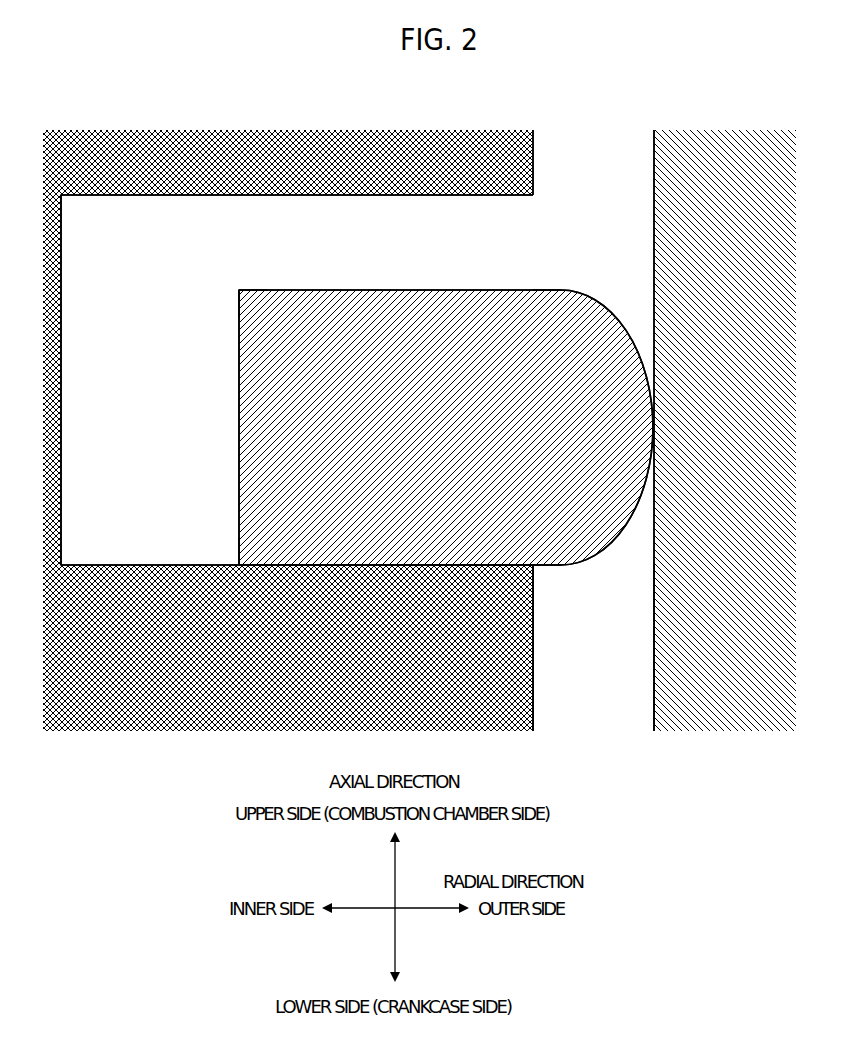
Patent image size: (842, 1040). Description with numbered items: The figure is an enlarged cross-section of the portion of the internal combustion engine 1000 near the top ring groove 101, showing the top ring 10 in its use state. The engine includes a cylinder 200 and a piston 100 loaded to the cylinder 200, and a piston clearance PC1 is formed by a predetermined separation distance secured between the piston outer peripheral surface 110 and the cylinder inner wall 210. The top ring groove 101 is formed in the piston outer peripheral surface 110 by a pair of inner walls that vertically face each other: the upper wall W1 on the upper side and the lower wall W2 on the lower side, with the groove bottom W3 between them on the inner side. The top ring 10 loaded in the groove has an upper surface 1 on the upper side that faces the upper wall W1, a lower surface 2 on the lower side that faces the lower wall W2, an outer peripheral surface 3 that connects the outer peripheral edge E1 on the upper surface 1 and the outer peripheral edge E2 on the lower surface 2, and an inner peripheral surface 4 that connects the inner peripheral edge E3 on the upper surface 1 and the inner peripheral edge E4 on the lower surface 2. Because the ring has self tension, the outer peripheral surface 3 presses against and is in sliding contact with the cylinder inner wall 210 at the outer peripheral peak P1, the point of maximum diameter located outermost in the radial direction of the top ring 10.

The internal combustion engine 1000 is at (130, 103).
The piston 100 is at (288, 430).
The top ring groove 101 is at (178, 243).
The piston outer peripheral surface 110 is at (525, 178).
The cylinder 200 is at (725, 430).
The cylinder inner wall 210 is at (646, 152).
The top ring 10 is at (362, 262).
The upper surface 1 is at (390, 282).
The lower surface 2 is at (389, 558).
The outer peripheral surface 3 is at (637, 344).
The inner peripheral surface 4 is at (230, 404).
The outer peripheral edge E1 is at (537, 282).
The outer peripheral edge E2 is at (538, 557).
The inner peripheral edge E3 is at (232, 283).
The inner peripheral edge E4 is at (230, 558).
The upper wall W1 is at (130, 187).
The lower wall W2 is at (130, 557).
The groove bottom wall surface W3 is at (57, 348).
The outer peripheral peak P1 is at (652, 415).
The piston clearance PC1 is at (600, 686).